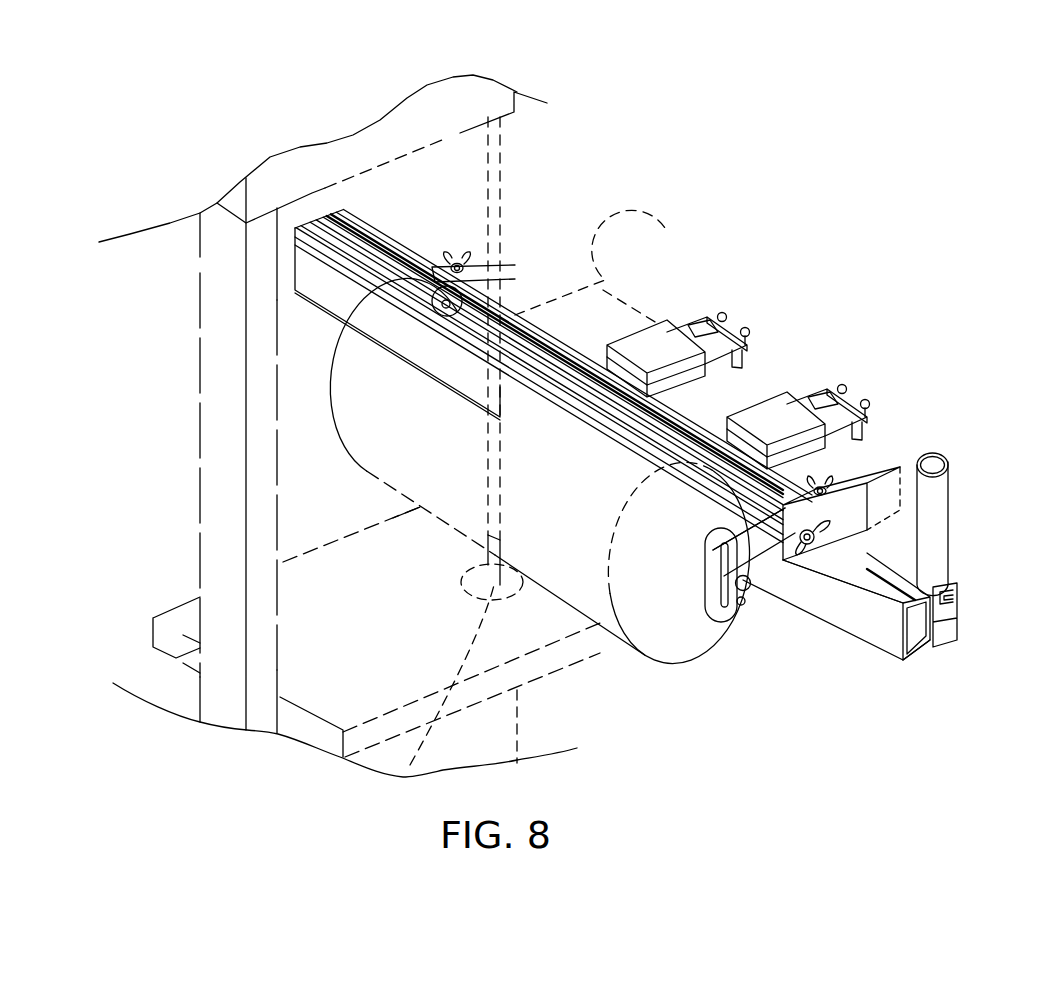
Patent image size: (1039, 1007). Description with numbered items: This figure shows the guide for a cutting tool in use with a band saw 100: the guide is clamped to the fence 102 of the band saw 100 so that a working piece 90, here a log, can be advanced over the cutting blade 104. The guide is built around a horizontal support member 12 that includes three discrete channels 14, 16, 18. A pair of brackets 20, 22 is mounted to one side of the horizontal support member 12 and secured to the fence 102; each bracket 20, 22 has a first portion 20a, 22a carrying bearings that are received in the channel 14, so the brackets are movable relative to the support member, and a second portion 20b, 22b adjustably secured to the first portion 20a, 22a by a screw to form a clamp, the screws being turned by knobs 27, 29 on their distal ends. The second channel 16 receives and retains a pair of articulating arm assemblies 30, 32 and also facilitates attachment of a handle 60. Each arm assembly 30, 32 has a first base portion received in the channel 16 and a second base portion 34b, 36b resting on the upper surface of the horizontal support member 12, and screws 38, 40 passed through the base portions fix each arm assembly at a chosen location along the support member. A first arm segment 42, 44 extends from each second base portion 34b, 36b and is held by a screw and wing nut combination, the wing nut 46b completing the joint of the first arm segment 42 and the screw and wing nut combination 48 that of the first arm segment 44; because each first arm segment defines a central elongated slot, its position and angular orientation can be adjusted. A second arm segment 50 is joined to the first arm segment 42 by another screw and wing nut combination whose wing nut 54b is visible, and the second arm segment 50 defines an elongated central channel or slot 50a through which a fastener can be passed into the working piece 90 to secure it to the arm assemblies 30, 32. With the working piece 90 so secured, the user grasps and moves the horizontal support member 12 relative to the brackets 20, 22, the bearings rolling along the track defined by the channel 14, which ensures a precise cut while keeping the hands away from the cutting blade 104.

The horizontal support member 12 is at (930, 650).
The channel 14 is at (952, 633).
The second channel 16 is at (958, 604).
The channel 18 is at (915, 658).
The bracket 20 is at (813, 383).
The first portion 20a is at (783, 413).
The second portion 20b is at (822, 387).
The bracket 22 is at (689, 315).
The first portion 22a is at (665, 338).
The second portion 22b is at (700, 317).
The knob 27 is at (869, 405).
The knob 29 is at (748, 329).
The arm assembly 30 is at (783, 658).
The arm assembly 32 is at (527, 233).
The second base portion 34b is at (843, 523).
The second base portion 36b is at (503, 300).
The screw 38 is at (836, 478).
The screw 40 is at (470, 262).
The first arm segment 42 is at (768, 560).
The first arm segment 44 is at (437, 290).
The wing nut 46b is at (845, 530).
The screw and wing nut combination 48 is at (373, 290).
The second arm segment 50 is at (698, 620).
The elongated central channel or slot 50a is at (717, 608).
The wing nut 54b is at (745, 592).
The handle 60 is at (942, 497).
The working piece 90 is at (660, 660).
The band saw 100 is at (313, 723).
The fence 102 is at (612, 214).
The cutting blade 104 is at (400, 777).